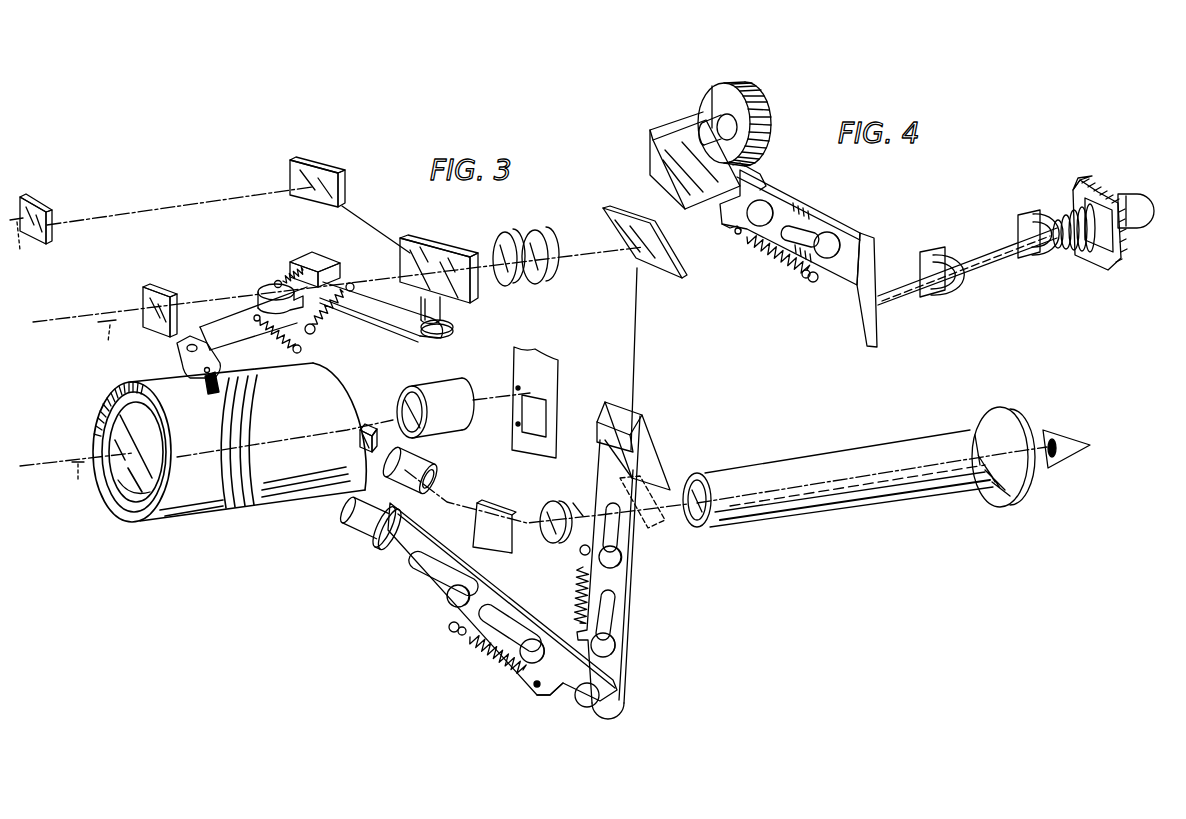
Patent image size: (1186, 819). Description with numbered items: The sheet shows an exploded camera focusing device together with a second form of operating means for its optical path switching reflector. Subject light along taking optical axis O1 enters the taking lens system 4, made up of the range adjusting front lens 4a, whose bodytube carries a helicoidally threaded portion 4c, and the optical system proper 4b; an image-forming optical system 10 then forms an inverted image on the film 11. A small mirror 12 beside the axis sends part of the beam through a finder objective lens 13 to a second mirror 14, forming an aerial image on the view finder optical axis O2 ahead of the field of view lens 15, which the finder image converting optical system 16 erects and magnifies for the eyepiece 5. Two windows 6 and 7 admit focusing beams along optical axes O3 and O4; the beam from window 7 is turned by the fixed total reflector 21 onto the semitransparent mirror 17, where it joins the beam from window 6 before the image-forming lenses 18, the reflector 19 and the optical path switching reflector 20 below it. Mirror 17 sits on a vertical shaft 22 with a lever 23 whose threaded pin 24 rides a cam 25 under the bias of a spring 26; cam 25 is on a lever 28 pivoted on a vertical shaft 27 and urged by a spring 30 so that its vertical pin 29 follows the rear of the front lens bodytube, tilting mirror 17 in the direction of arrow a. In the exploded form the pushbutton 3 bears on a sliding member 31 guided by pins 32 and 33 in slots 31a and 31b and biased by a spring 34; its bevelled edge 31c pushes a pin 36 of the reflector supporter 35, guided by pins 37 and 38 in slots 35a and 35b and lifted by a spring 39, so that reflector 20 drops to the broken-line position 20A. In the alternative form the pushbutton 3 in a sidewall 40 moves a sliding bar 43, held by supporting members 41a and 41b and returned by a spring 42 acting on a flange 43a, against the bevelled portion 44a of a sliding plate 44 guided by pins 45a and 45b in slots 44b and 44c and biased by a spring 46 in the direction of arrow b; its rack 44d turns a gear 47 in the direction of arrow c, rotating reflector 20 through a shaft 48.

In FIG. 3, the pushbutton 3 is at (352, 527).
In FIG. 4, the pushbutton 3 is at (1135, 195).
In FIG. 3, the taking lens system 4 is at (229, 469).
In FIG. 3, the range adjusting front lens 4a is at (172, 520).
In FIG. 3, the optical system proper 4b is at (278, 490).
In FIG. 3, the helicoidally threaded portion 4c is at (243, 500).
In FIG. 3, the eyepiece 5 is at (988, 422).
In FIG. 3, the window 6 is at (143, 300).
In FIG. 3, the window 7 is at (30, 197).
In FIG. 3, the image-forming optical system 10 is at (462, 397).
In FIG. 3, the film 11 is at (553, 362).
In FIG. 3, the small mirror 12 is at (366, 452).
In FIG. 3, the finder objective lens 13 is at (428, 462).
In FIG. 3, the second mirror 14 is at (490, 505).
In FIG. 3, the field of view lens 15 is at (545, 506).
In FIG. 3, the finder image converting optical system 16 is at (778, 473).
In FIG. 3, the semitransparent mirror 17 is at (413, 247).
In FIG. 3, the image-forming lenses 18 is at (535, 297).
In FIG. 3, the reflector 19 is at (658, 270).
In FIG. 3, the optical path switching reflector 20 is at (650, 445).
In FIG. 4, the optical path switching reflector 20 is at (683, 196).
In FIG. 3, the position of switching reflector 20A is at (676, 518).
In FIG. 3, the total reflector 21 is at (290, 168).
In FIG. 3, the vertical shaft 22 is at (430, 323).
In FIG. 3, the lever 23 is at (393, 305).
In FIG. 3, the threaded pin 24 is at (286, 279).
In FIG. 3, the cam 25 is at (260, 290).
In FIG. 3, the spring 26 is at (325, 312).
In FIG. 3, the vertical shaft 27 is at (178, 348).
In FIG. 3, the lever 28 is at (235, 313).
In FIG. 3, the vertical pin 29 is at (205, 384).
In FIG. 3, the spring 30 is at (278, 340).
In FIG. 3, the sliding member 31 is at (487, 619).
In FIG. 3, the slot 31a is at (427, 572).
In FIG. 3, the slot 31b is at (500, 613).
In FIG. 3, the bevelled edge 31c is at (560, 700).
In FIG. 3, the pin 32 is at (455, 600).
In FIG. 3, the pin 33 is at (530, 643).
In FIG. 3, the spring 34 is at (473, 636).
In FIG. 3, the reflector supporter 35 is at (636, 567).
In FIG. 3, the slot 35a is at (620, 617).
In FIG. 3, the slot 35b is at (622, 558).
In FIG. 3, the pin 36 is at (612, 708).
In FIG. 3, the pin 37 is at (617, 660).
In FIG. 3, the pin 38 is at (622, 572).
In FIG. 3, the spring 39 is at (582, 580).
In FIG. 4, the sidewall 40 is at (1095, 232).
In FIG. 4, the supporting member 41a is at (1038, 217).
In FIG. 4, the supporting member 41b is at (948, 258).
In FIG. 4, the spring 42 is at (1067, 255).
In FIG. 4, the sliding bar 43 is at (990, 272).
In FIG. 4, the flange 43a is at (1085, 186).
In FIG. 4, the sliding plate 44 is at (810, 247).
In FIG. 4, the bevelled portion 44a is at (880, 325).
In FIG. 4, the slot 44b is at (822, 232).
In FIG. 4, the slot 44c is at (729, 217).
In FIG. 4, the rack 44d is at (762, 183).
In FIG. 4, the pin 45a is at (840, 242).
In FIG. 4, the pin 45b is at (775, 205).
In FIG. 4, the spring 46 is at (752, 252).
In FIG. 4, the gear 47 is at (702, 108).
In FIG. 4, the shaft 48 is at (702, 118).
In FIG. 3, the optical axis O1 is at (71, 486).
In FIG. 3, the view finder optical axis O2 is at (573, 498).
In FIG. 3, the optical axis O3 is at (100, 339).
In FIG. 3, the optical axis O4 is at (28, 249).
In FIG. 3, the arrow a is at (462, 320).
In FIG. 4, the arrow b is at (789, 290).
In FIG. 4, the arrow c is at (747, 115).